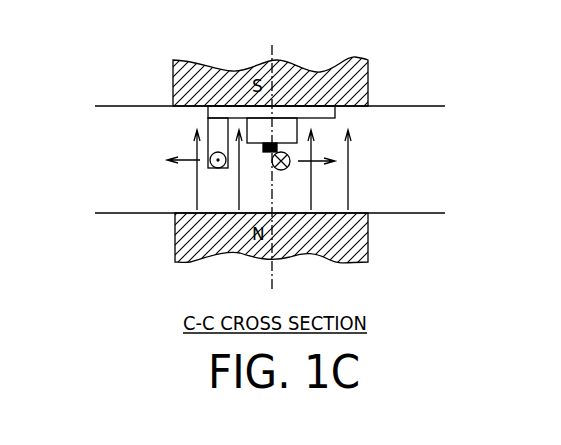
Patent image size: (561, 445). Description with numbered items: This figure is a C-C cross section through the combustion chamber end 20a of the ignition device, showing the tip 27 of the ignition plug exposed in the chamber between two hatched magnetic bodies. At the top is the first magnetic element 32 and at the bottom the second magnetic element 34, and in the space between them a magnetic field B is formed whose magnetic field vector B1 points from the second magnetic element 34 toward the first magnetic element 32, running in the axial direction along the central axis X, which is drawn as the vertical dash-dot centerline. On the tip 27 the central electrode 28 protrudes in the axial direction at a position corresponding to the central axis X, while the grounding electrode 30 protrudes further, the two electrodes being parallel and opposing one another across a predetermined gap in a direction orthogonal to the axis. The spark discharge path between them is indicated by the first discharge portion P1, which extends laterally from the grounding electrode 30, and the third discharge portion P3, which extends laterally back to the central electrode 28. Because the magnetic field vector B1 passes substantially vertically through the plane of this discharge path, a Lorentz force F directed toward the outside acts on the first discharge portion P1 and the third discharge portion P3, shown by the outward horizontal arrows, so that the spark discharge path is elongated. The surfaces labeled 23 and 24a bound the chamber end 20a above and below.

The first magnetic element 32 is at (173, 75).
The second magnetic element 34 is at (175, 242).
The grounding electrode 30 is at (208, 126).
The central electrode 28 is at (266, 148).
The tip 27 is at (340, 115).
The upper surface line 23 is at (428, 107).
The lower surface 24a is at (425, 213).
The end of the combustion chamber 20a is at (118, 175).
The first discharge portion P1 is at (218, 168).
The third discharge portion P3 is at (284, 170).
The magnetic field vector B1 is at (349, 148).
The magnetic field B is at (366, 193).
The Lorentz force F is at (251, 174).
The central axis X is at (272, 277).